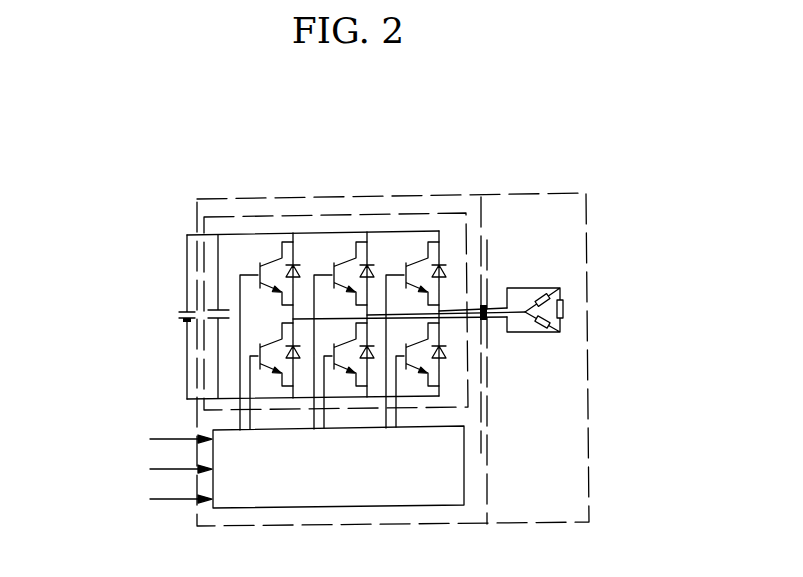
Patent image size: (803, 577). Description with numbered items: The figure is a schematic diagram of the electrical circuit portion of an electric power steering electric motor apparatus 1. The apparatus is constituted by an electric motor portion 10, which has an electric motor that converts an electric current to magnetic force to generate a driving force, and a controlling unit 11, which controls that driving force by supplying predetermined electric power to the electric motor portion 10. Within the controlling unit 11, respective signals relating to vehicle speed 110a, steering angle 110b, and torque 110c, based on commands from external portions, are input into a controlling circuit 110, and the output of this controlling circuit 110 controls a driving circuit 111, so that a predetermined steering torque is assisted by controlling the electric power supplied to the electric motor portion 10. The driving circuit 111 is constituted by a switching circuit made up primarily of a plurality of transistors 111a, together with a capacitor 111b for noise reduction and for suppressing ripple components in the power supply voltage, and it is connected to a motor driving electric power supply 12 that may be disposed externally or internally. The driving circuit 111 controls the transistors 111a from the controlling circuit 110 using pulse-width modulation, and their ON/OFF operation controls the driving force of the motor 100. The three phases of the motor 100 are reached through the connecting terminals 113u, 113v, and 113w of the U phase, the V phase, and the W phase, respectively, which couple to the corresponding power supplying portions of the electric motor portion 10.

The electric power steering electric motor apparatus 1 is at (76, 94).
The electric motor portion 10 is at (417, 327).
The controlling unit 11 is at (478, 140).
The driving circuit 111 is at (313, 288).
The transistors 111a is at (256, 259).
The capacitor 111b is at (256, 327).
The motor driving electric power supply 12 is at (152, 317).
The connecting terminal 113u is at (547, 246).
The connecting terminal 113v is at (510, 359).
The connecting terminal 113w is at (476, 389).
The motor 100 is at (578, 281).
The controlling circuit 110 is at (431, 469).
The vehicle speed signal 110a is at (154, 441).
The steering angle signal 110b is at (154, 472).
The torque signal 110c is at (154, 502).